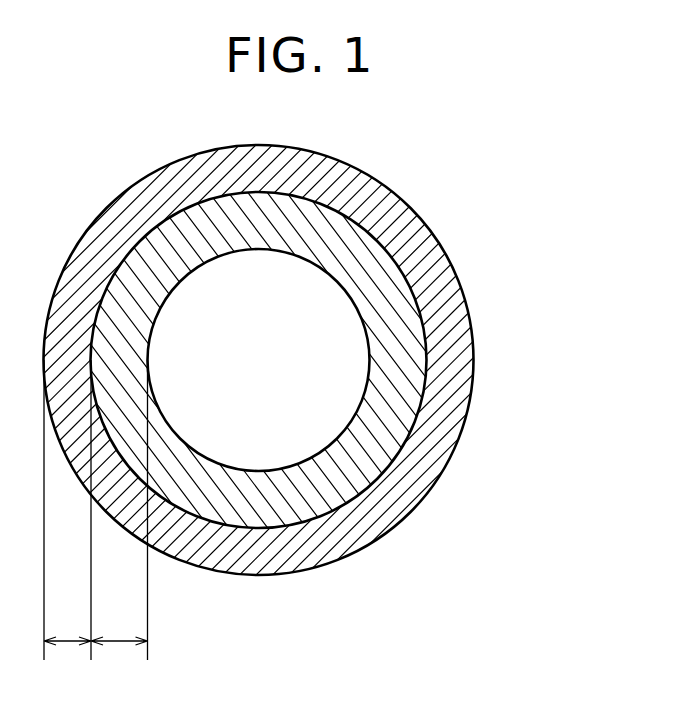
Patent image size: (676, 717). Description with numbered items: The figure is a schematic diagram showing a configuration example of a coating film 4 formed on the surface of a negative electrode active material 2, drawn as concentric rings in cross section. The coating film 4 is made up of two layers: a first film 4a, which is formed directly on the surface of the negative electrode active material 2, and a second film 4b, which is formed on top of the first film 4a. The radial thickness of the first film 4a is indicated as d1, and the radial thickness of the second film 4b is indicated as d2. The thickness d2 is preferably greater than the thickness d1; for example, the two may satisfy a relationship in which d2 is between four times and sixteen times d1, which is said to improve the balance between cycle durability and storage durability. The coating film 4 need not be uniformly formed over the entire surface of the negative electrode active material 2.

The negative electrode active material 2 is at (305, 347).
The coating film 4 is at (292, 357).
The first film 4a is at (399, 300).
The second film 4b is at (416, 248).
The thickness of the first film d1 is at (119, 519).
The thickness of the second film d2 is at (67, 519).